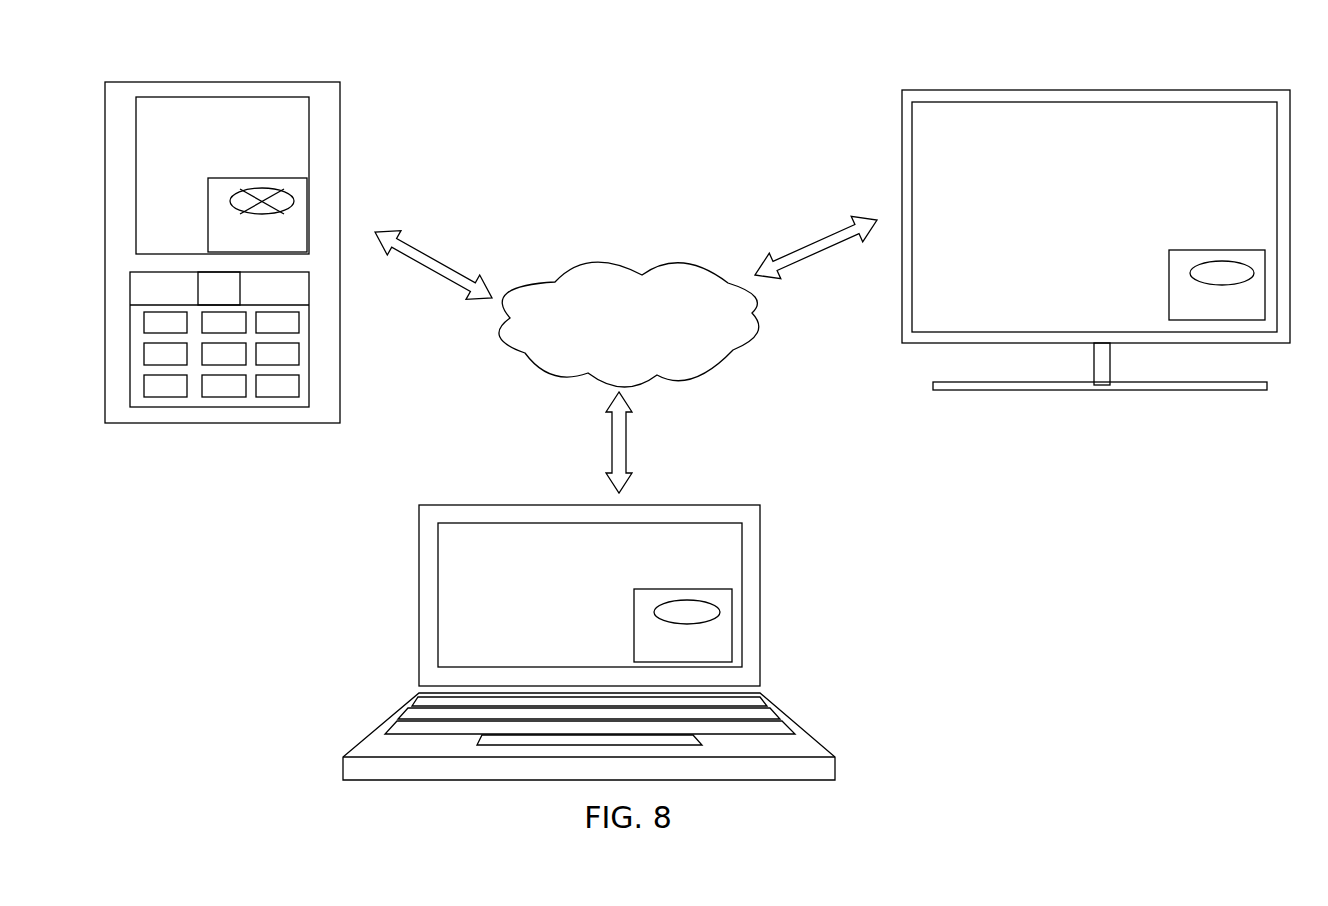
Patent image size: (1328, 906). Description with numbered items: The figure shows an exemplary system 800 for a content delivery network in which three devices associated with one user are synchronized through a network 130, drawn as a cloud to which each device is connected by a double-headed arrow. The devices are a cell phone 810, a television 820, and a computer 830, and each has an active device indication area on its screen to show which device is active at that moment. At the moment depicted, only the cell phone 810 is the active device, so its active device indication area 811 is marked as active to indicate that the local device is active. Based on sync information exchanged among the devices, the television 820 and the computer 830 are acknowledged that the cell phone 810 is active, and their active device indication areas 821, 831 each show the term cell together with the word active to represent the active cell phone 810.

The system 800 is at (697, 398).
The network 130 is at (677, 262).
The cell phone 810 is at (252, 252).
The active device indication area 811 is at (248, 177).
The television 820 is at (1096, 212).
The active device indication area 821 is at (1207, 248).
The computer 830 is at (589, 642).
The active device indication area 831 is at (673, 587).